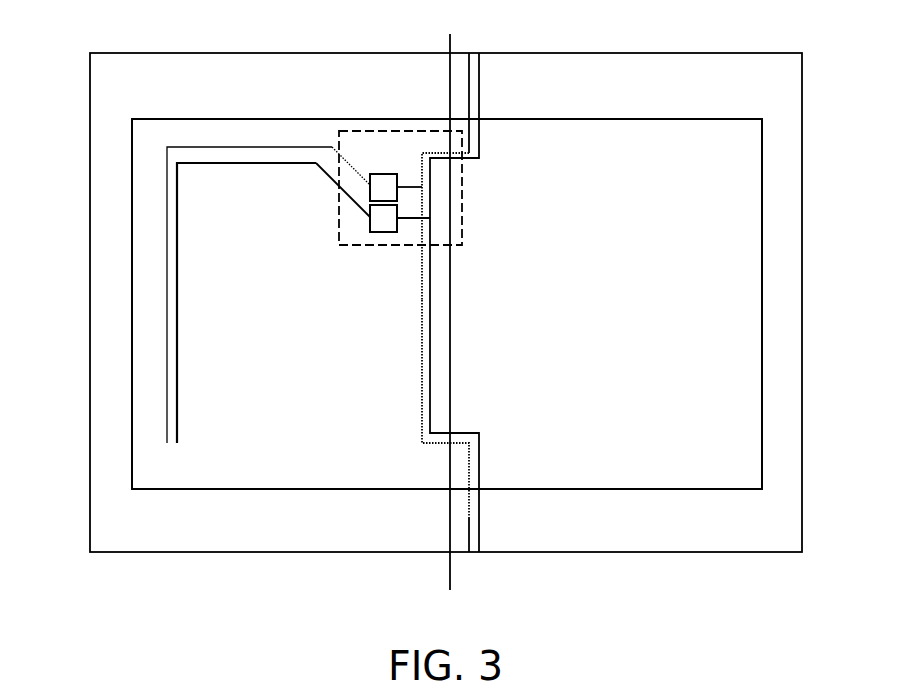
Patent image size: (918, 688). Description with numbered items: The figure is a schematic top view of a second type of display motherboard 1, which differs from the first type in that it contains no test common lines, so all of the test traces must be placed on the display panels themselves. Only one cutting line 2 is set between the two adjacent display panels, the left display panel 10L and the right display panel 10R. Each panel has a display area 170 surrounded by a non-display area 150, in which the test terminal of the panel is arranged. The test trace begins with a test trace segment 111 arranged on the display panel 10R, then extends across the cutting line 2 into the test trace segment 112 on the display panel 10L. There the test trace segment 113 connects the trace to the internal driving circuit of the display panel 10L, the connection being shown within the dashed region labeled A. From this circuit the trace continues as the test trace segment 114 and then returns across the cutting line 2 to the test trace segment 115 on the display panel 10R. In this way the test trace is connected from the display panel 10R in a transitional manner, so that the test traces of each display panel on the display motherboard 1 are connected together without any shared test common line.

The display motherboard 1 is at (103, 73).
The cutting line 2 is at (450, 34).
The display panel 10L is at (148, 268).
The display panel 10R is at (732, 259).
The non-display area 150 is at (140, 307).
The display area 170 is at (288, 318).
The test trace segment 111 is at (480, 138).
The test trace segment 112 is at (422, 153).
The test trace segment 113 is at (408, 178).
The test trace segment 114 is at (422, 443).
The test trace segment 115 is at (479, 467).
The enlarged region A is at (413, 188).